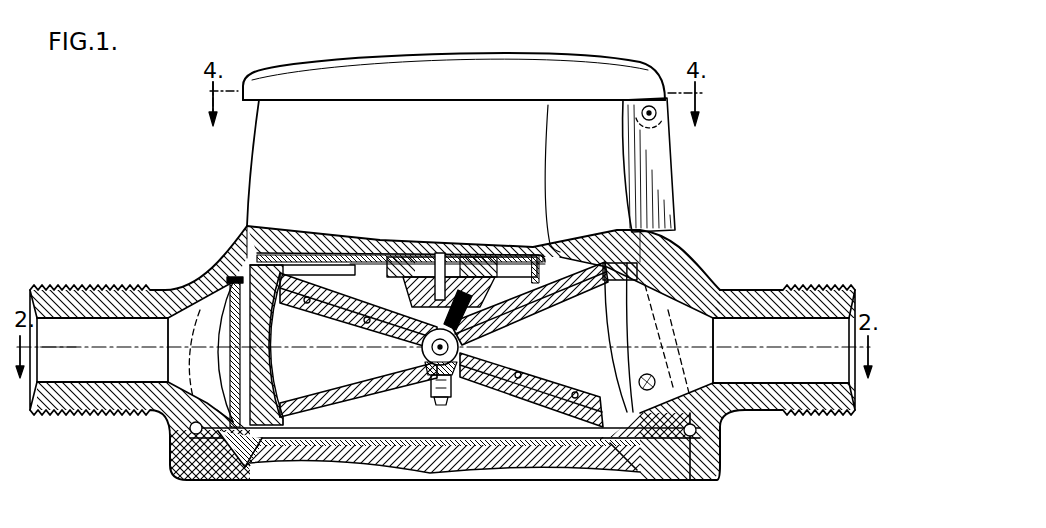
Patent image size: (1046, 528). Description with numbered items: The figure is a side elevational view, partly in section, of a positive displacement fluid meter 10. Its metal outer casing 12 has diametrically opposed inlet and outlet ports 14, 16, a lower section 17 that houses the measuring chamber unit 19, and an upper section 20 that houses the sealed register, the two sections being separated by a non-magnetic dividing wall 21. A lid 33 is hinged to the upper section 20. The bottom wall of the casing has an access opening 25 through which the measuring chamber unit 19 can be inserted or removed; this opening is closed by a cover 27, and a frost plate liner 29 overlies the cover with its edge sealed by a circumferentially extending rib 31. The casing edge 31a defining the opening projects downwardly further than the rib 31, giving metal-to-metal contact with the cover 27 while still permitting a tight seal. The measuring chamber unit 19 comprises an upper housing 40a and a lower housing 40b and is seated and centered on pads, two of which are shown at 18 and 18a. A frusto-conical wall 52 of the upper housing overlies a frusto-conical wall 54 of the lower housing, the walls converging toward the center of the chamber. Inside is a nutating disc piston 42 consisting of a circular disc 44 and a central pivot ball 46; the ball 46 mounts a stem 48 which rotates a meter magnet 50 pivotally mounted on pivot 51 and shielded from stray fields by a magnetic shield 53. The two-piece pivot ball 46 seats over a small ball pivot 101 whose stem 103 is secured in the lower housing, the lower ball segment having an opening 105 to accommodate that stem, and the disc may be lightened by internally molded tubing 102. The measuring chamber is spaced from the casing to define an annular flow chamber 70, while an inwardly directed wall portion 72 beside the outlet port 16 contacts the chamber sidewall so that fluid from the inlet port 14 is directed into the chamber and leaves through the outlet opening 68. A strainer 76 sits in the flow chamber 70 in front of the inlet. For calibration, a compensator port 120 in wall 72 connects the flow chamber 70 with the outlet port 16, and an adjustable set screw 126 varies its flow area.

The positive displacement type fluid meter 10 is at (248, 193).
The metal outer casing 12 is at (170, 413).
The inlet port 14 is at (78, 320).
The outlet port 16 is at (771, 318).
The lower section 17 is at (727, 428).
The pad 18 is at (263, 252).
The pad 18a is at (645, 270).
The measuring chamber unit 19 is at (333, 425).
The upper section 20 is at (622, 190).
The non-magnetic dividing wall 21 is at (570, 242).
The access opening 25 is at (213, 432).
The cover 27 is at (445, 462).
The frost plate liner 29 is at (560, 445).
The circumferentially extending rib 31 is at (180, 460).
The edge of the casing 31a is at (708, 437).
The lid 33 is at (307, 64).
The upper housing 40a is at (279, 263).
The lower housing 40b is at (283, 425).
The nutating disc piston 42 is at (540, 329).
The circular disc 44 is at (418, 344).
The pivot ball 46 is at (462, 338).
The stem 48 is at (480, 280).
The meter magnet 50 is at (406, 257).
The pivot 51 is at (463, 257).
The frusto-conical wall 52 is at (328, 285).
The magnetic shield 53 is at (376, 250).
The frusto-conical wall 54 is at (395, 390).
The outlet opening 68 is at (605, 263).
The annular flow chamber 70 is at (245, 272).
The inwardly directed wall portion 72 is at (640, 300).
The strainer 76 is at (232, 356).
The ball pivot 101 is at (430, 352).
The lightweight tubing 102 is at (308, 303).
The stem 103 is at (462, 378).
The opening 105 is at (430, 375).
The compensator port 120 is at (655, 380).
The adjustable set screw 126 is at (645, 372).